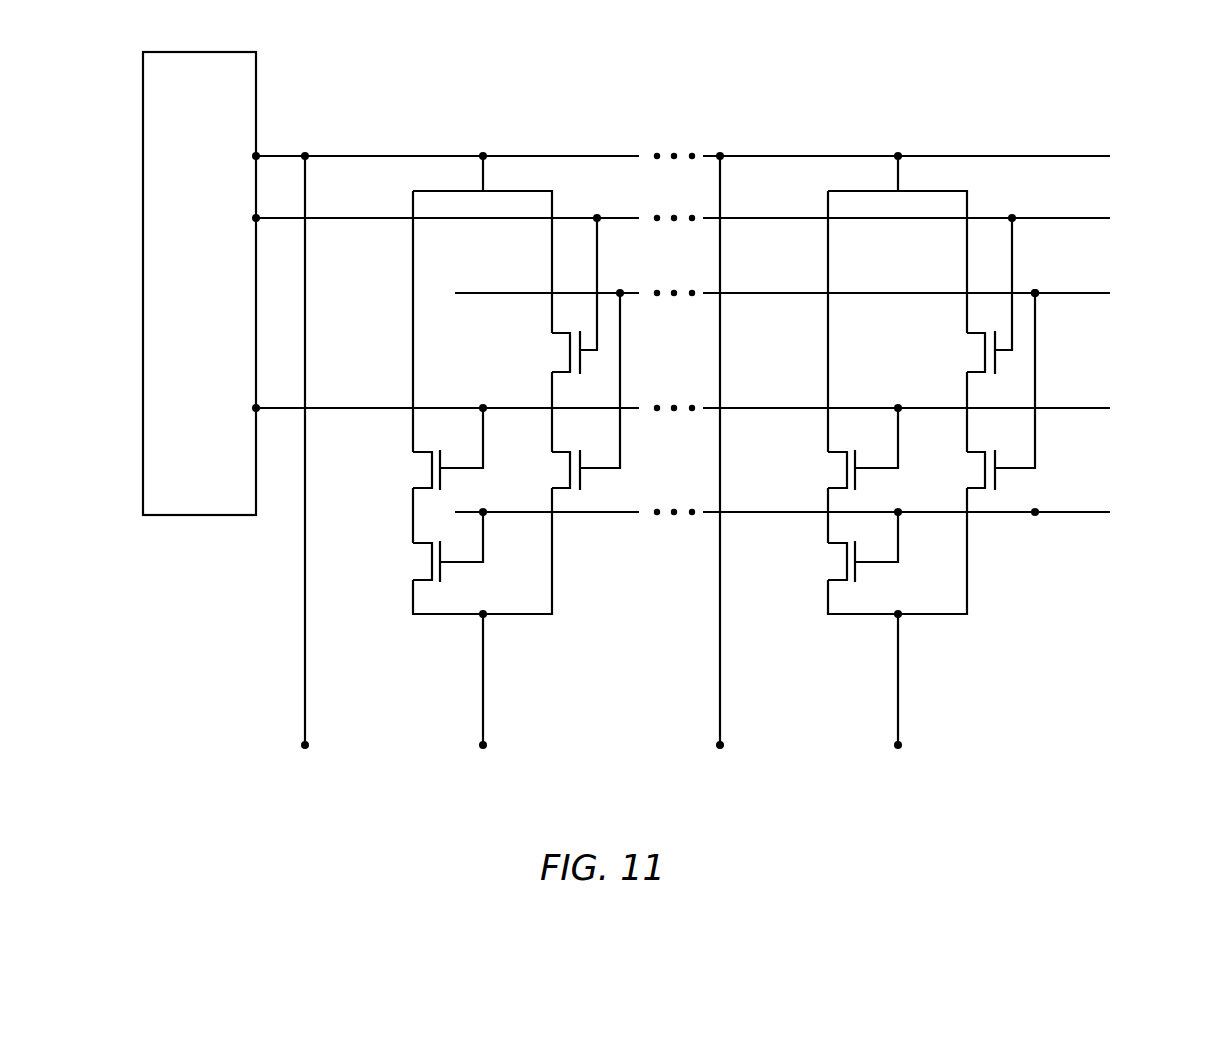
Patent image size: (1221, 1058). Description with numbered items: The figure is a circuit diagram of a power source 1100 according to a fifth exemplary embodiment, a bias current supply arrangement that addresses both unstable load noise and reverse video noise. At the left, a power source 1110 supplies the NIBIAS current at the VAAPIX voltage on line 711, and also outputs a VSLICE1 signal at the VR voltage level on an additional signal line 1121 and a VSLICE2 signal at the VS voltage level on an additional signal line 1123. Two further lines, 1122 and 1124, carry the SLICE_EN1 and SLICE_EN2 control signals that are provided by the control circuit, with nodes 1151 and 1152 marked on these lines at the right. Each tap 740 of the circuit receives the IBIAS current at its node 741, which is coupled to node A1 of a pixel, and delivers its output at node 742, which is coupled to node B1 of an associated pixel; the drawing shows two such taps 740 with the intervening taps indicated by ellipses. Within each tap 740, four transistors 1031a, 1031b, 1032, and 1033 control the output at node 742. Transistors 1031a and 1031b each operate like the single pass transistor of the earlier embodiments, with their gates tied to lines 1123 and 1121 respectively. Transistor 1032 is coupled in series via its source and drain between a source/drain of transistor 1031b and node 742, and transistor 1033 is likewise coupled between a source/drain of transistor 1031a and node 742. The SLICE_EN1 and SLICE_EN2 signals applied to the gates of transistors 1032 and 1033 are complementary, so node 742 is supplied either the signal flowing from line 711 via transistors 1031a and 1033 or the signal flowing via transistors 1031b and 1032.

The power source 1100 is at (630, 127).
The power source 1110 is at (222, 158).
The node 711 is at (256, 156).
The additional signal line 1121 is at (256, 218).
The SLICE_EN1 line 1122 is at (1096, 293).
The additional signal line 1123 is at (256, 408).
The SLICE_EN2 line 1124 is at (1096, 512).
The transistor 1031a is at (413, 470).
The transistor 1031b is at (562, 354).
The transistor 1032 is at (552, 470).
The transistor 1033 is at (413, 563).
The node 741 is at (307, 748).
The output node 742 is at (485, 748).
The tap 740 is at (495, 800).
The SLICE_EN1 node 1151 is at (1043, 304).
The SLICE_EN2 node 1152 is at (1040, 530).